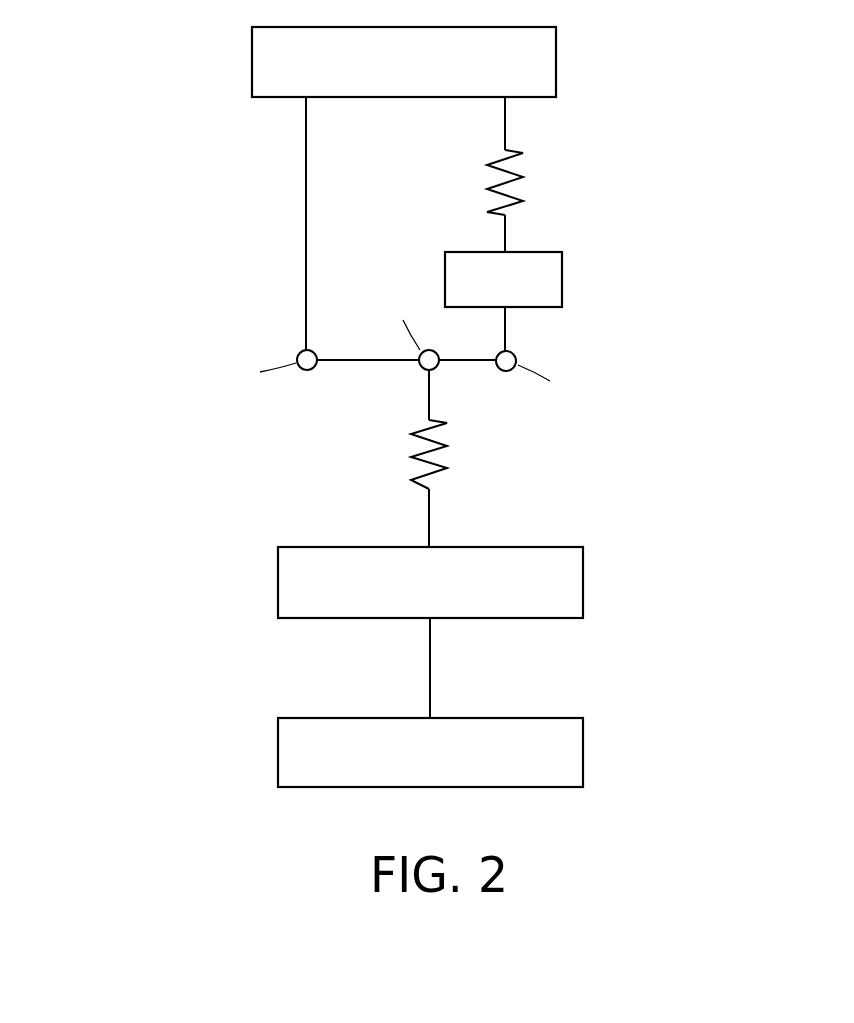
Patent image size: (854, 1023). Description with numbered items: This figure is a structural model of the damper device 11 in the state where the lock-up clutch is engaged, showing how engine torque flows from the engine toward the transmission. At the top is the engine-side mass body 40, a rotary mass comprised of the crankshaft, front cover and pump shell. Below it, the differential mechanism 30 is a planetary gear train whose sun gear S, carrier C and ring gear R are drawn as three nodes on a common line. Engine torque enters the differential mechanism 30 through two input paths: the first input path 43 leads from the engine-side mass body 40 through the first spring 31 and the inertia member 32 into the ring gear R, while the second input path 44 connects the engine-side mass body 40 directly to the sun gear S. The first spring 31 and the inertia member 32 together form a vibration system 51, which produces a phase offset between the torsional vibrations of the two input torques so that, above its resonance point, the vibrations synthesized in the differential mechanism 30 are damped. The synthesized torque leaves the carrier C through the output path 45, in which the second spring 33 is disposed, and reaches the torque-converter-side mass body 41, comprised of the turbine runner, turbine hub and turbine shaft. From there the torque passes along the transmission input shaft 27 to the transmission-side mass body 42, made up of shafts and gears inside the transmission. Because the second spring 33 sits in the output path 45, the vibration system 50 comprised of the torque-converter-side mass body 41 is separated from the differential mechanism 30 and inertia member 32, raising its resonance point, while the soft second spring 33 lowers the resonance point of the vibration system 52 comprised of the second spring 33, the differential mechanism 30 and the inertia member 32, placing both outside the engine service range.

The damper device 11 is at (148, 188).
The transmission input shaft 27 is at (432, 672).
The differential mechanism 30 is at (409, 362).
The first spring 31 is at (490, 179).
The inertia member 32 is at (562, 257).
The second spring 33 is at (445, 468).
The engine-side mass body 40 is at (252, 44).
The torque-converter-side mass body 41 is at (278, 562).
The transmission-side mass body 42 is at (278, 732).
The first input path 43 is at (536, 199).
The second input path 44 is at (286, 198).
The output path 45 is at (429, 458).
The vibration system 50 is at (448, 577).
The vibration system 51 is at (536, 228).
The vibration system 52 is at (610, 384).